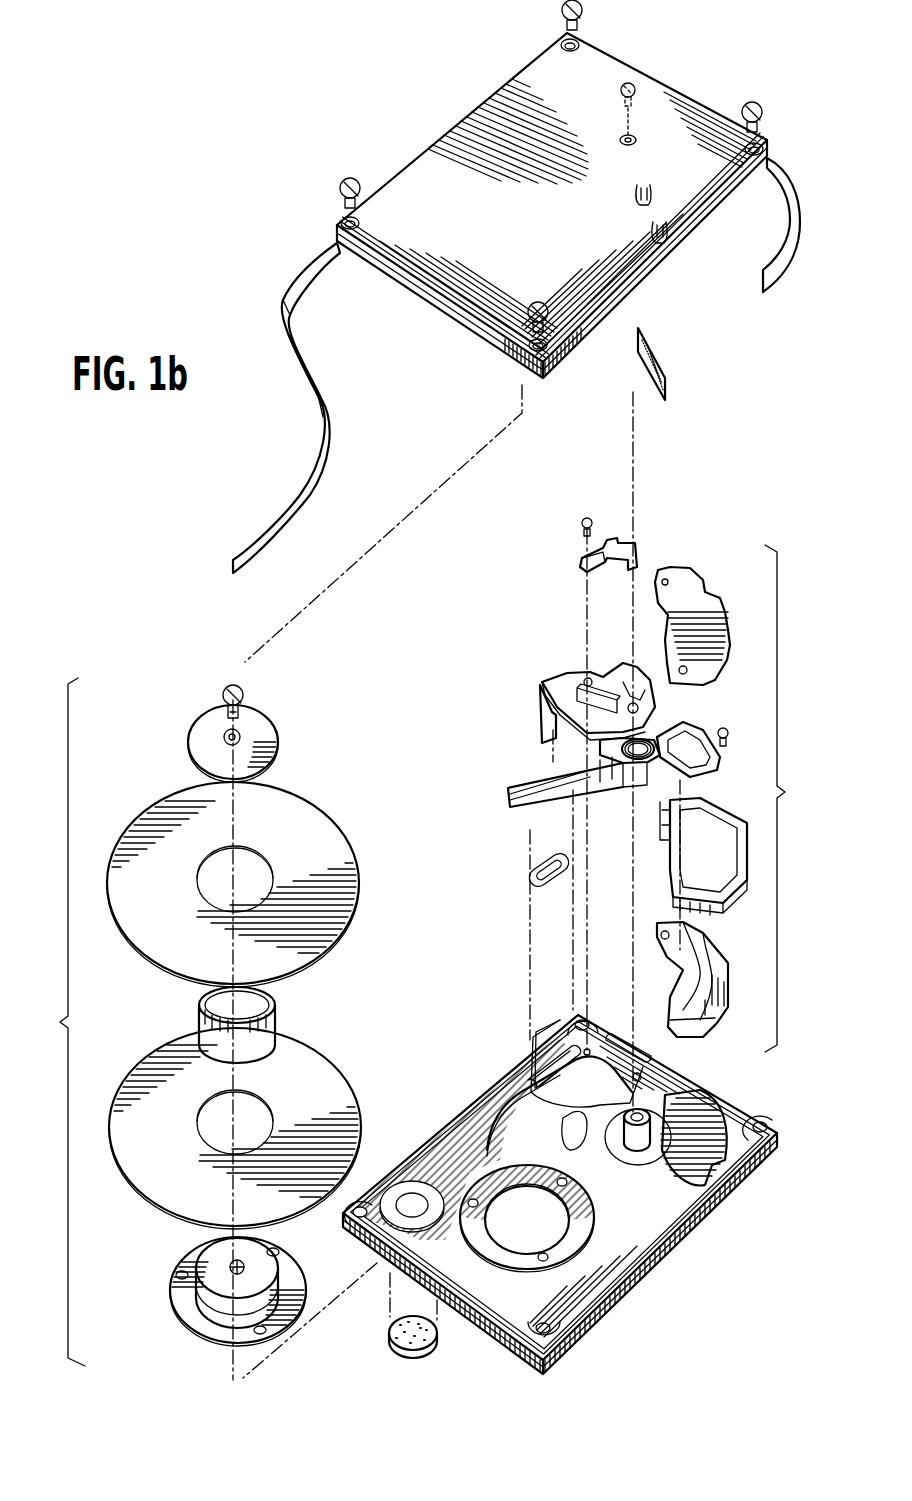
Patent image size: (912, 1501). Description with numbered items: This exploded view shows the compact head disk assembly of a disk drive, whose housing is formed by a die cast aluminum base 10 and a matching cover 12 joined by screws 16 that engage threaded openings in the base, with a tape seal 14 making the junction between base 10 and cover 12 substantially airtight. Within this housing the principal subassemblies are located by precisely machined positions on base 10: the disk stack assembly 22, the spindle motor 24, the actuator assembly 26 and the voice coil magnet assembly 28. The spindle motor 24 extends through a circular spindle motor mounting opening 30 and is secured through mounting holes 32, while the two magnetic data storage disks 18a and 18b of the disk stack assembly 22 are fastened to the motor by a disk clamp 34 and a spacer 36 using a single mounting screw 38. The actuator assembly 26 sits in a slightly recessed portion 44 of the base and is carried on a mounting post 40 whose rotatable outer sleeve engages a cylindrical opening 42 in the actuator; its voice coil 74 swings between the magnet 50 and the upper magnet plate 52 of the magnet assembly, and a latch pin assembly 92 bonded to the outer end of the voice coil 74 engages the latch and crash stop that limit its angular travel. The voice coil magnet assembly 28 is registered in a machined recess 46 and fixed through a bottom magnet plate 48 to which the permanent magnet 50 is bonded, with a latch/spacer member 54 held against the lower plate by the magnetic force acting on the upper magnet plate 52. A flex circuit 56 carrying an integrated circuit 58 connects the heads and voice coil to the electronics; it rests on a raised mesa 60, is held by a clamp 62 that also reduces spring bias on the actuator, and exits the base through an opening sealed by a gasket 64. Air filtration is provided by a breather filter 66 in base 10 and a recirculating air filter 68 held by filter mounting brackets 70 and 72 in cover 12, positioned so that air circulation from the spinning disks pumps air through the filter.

The base 10 is at (740, 1181).
The cover 12 is at (497, 88).
The tape seal 14 is at (293, 497).
The screws 16 is at (583, 12).
The magnetic data storage disk 18a is at (320, 806).
The magnetic data storage disk 18b is at (320, 1049).
The disk stack assembly 22 is at (203, 1016).
The spindle motor 24 is at (181, 1305).
The actuator assembly 26 is at (573, 815).
The voice coil magnet assembly 28 is at (651, 783).
The spindle motor mounting opening 30 is at (527, 1219).
The mounting holes 32 is at (570, 1241).
The disk clamp 34 is at (270, 727).
The spacer 36 is at (277, 1005).
The mounting screw 38 is at (229, 685).
The mounting post 40 is at (650, 1128).
The cylindrical opening 42 is at (641, 757).
The recessed portion 44 is at (633, 1160).
The recess 46 is at (712, 1130).
The bottom magnet plate 48 is at (723, 1010).
The permanent magnet 50 is at (710, 972).
The upper magnet plate 52 is at (715, 617).
The latch/spacer member 54 is at (733, 897).
The flex circuit 56 is at (562, 728).
The integrated circuit 58 is at (583, 690).
The mesa 60 is at (581, 1055).
The clamp 62 is at (620, 543).
The gasket 64 is at (540, 888).
The breather filter 66 is at (389, 1342).
The recirculating air filter 68 is at (672, 389).
The filter mounting bracket 70 is at (652, 236).
The filter mounting bracket 72 is at (650, 185).
The voice coil 74 is at (712, 774).
The latch pin assembly 92 is at (724, 729).